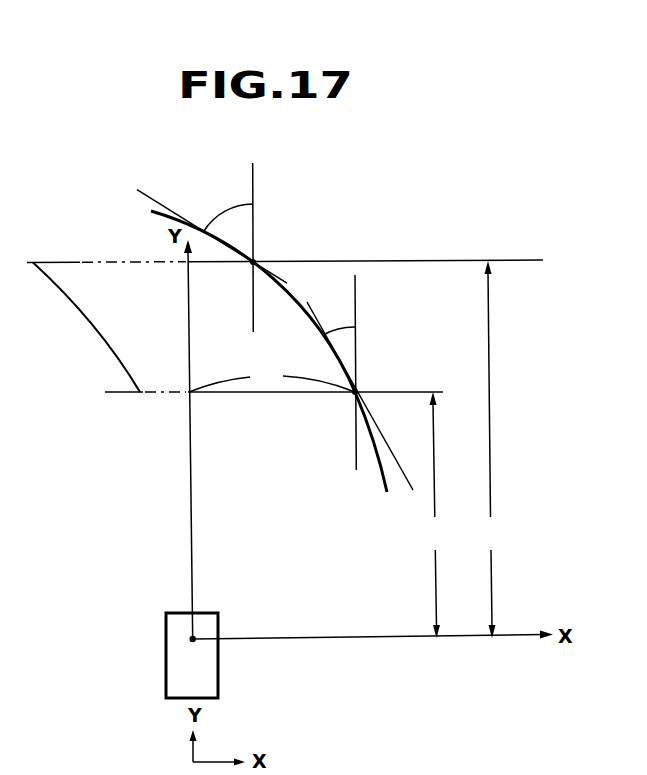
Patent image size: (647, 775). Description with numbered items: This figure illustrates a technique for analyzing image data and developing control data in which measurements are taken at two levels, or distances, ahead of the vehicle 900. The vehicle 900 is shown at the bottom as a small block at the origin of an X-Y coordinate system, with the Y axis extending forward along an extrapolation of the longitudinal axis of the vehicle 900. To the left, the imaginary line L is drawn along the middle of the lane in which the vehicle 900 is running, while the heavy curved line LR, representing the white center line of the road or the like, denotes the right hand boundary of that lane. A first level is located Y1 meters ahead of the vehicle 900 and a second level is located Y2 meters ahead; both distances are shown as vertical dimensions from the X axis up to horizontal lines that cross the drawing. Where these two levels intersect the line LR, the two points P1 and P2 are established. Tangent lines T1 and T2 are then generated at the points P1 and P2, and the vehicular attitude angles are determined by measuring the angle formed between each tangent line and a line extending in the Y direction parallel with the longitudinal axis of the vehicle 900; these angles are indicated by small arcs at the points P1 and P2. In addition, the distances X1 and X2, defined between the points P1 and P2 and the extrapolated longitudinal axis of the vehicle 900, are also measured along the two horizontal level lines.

The vehicle 900 is at (166, 659).
The imaginary line L is at (93, 326).
The line LR is at (382, 476).
The tangent line T1 is at (311, 301).
The tangent line T2 is at (150, 197).
The point P1 is at (353, 395).
The point P2 is at (256, 260).
The distance X1 is at (272, 378).
The distance X2 is at (220, 274).
The first level distance Y1 is at (435, 515).
The second level distance Y2 is at (490, 449).